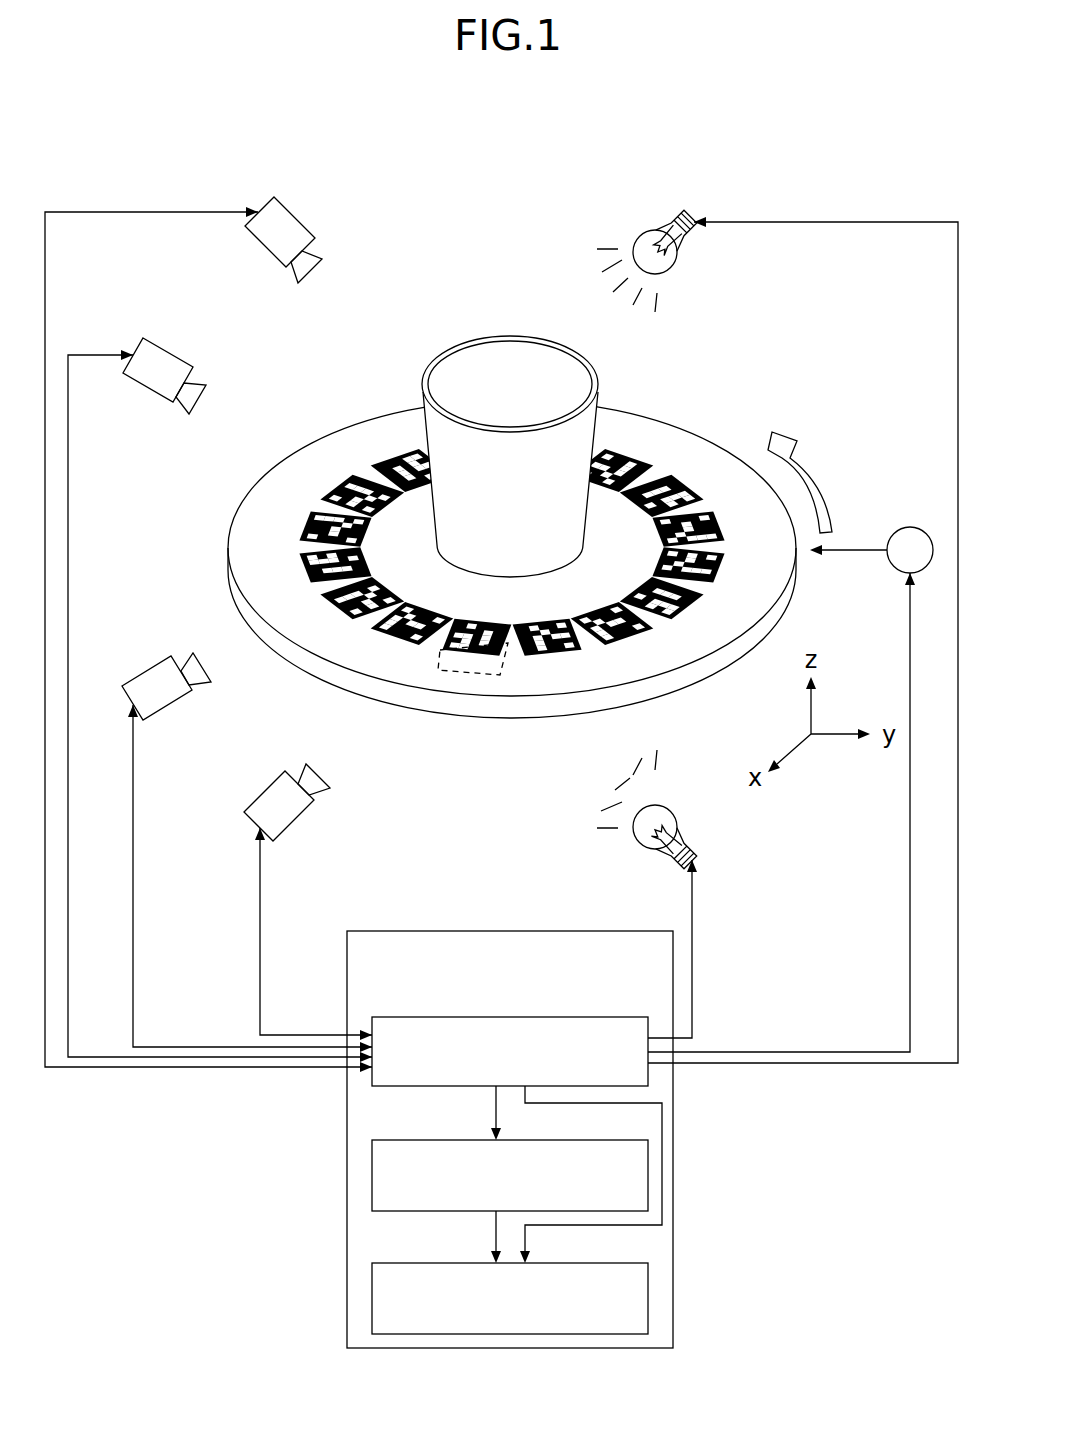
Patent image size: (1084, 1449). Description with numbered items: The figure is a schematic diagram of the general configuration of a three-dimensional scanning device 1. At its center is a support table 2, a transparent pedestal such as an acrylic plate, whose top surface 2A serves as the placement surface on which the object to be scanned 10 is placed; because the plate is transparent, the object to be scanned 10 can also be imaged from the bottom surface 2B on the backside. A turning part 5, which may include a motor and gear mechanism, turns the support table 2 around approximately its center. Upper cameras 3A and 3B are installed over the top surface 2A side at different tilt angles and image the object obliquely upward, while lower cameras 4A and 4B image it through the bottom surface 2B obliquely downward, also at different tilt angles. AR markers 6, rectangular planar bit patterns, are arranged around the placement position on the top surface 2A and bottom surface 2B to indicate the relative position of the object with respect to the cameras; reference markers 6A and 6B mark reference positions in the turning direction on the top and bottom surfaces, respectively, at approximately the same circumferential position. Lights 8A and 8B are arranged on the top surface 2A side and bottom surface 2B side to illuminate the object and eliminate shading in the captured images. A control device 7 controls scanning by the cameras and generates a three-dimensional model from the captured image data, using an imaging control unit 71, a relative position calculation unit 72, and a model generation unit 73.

The three-dimensional scanning device 1 is at (316, 159).
The support table 2 is at (478, 553).
The top surface 2A is at (335, 443).
The bottom surface 2B is at (357, 670).
The upper camera 3A is at (147, 387).
The upper camera 3B is at (265, 248).
The lower camera 4A is at (147, 670).
The lower camera 4B is at (267, 793).
The turning part 5 is at (912, 527).
The AR markers 6 is at (511, 606).
The reference marker 6A is at (450, 640).
The reference marker 6B is at (500, 668).
The control device 7 is at (510, 1124).
The imaging control unit 71 is at (548, 1016).
The relative position calculation unit 72 is at (548, 1140).
The model generation unit 73 is at (548, 1264).
The light 8A is at (680, 263).
The light 8B is at (680, 807).
The object to be scanned 10 is at (552, 343).